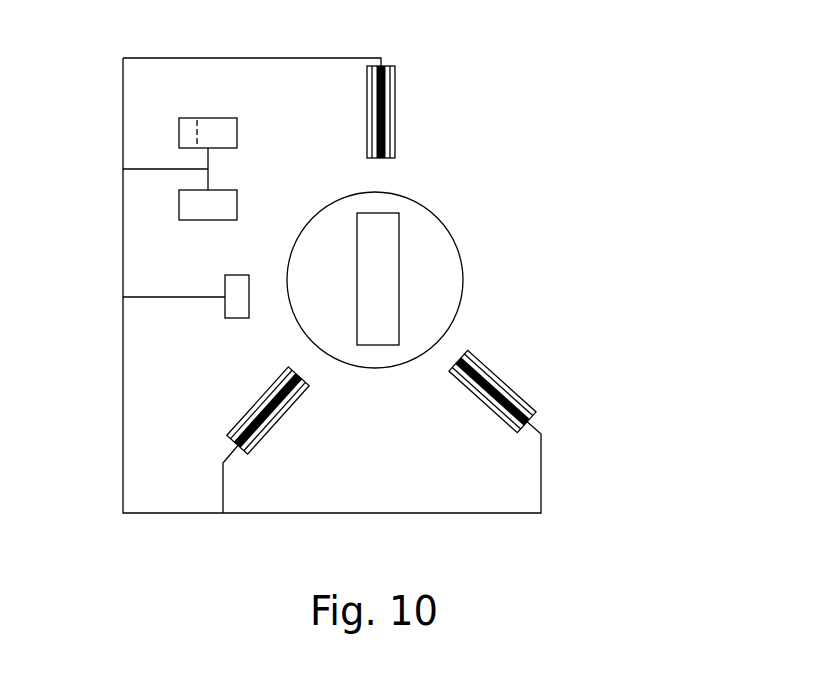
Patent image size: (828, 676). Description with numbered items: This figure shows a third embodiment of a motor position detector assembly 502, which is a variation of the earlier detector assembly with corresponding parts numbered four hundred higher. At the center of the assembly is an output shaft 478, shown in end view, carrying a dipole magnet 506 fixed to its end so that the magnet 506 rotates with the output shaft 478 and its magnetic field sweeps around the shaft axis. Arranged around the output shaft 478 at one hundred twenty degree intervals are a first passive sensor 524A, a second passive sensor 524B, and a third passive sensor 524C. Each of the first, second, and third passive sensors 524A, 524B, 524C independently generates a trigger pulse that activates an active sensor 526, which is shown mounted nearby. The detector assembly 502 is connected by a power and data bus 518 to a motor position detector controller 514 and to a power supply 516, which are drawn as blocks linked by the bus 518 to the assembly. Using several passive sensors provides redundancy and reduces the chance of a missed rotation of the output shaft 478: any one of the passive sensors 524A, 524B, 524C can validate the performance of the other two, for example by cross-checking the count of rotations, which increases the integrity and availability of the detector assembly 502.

The motor position detector assembly 502 is at (558, 103).
The output shaft 478 is at (463, 268).
The dipole magnet 506 is at (399, 235).
The motor position detector controller 514 is at (238, 129).
The power supply 516 is at (238, 212).
The power and data bus 518 is at (179, 138).
The active sensor 526 is at (225, 282).
The first passive sensor 524A is at (396, 117).
The second passive sensor 524B is at (498, 373).
The third passive sensor 524C is at (248, 412).